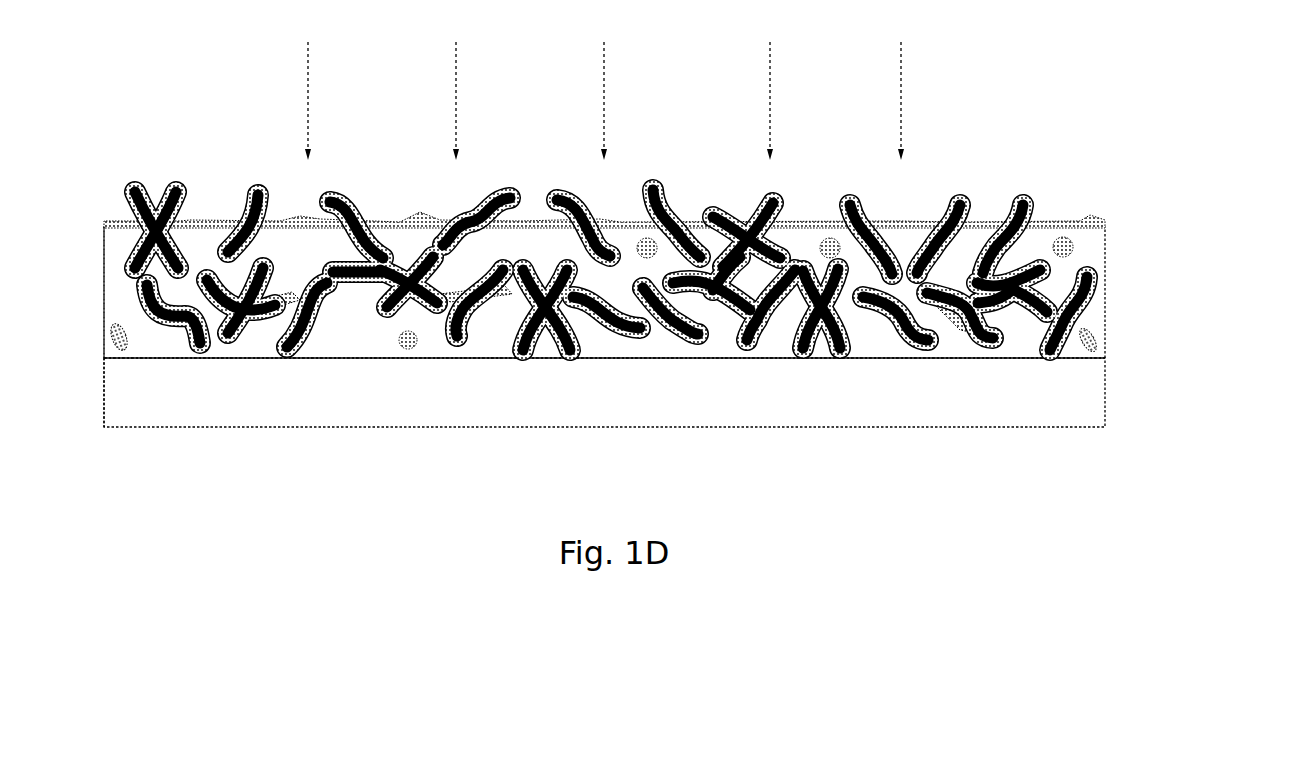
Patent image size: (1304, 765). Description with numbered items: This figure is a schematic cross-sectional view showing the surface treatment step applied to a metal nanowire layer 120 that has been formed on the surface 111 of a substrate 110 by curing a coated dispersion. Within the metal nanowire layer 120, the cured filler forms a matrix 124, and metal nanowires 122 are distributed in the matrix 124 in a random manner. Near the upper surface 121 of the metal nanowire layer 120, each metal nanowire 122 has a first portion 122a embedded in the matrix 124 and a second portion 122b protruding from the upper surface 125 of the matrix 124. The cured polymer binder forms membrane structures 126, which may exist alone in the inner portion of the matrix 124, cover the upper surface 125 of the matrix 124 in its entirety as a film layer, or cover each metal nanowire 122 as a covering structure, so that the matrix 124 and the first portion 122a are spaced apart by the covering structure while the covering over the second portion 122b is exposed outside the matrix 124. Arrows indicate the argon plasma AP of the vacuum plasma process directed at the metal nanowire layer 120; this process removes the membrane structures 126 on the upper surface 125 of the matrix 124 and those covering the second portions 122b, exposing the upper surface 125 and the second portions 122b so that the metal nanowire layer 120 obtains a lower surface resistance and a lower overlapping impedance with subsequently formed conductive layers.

The substrate 110 is at (1106, 393).
The surface of the substrate 111 is at (1006, 378).
The metal nanowire layer 120 is at (688, 209).
The upper surface of the metal nanowire layer 121 is at (940, 180).
The metal nanowires 122 is at (670, 205).
The first portion 122a is at (704, 184).
The second portion 122b is at (668, 195).
The matrix 124 is at (1098, 292).
The upper surface of the matrix 125 is at (108, 245).
The membrane structures 126 is at (1073, 246).
The argon plasma AP is at (902, 62).